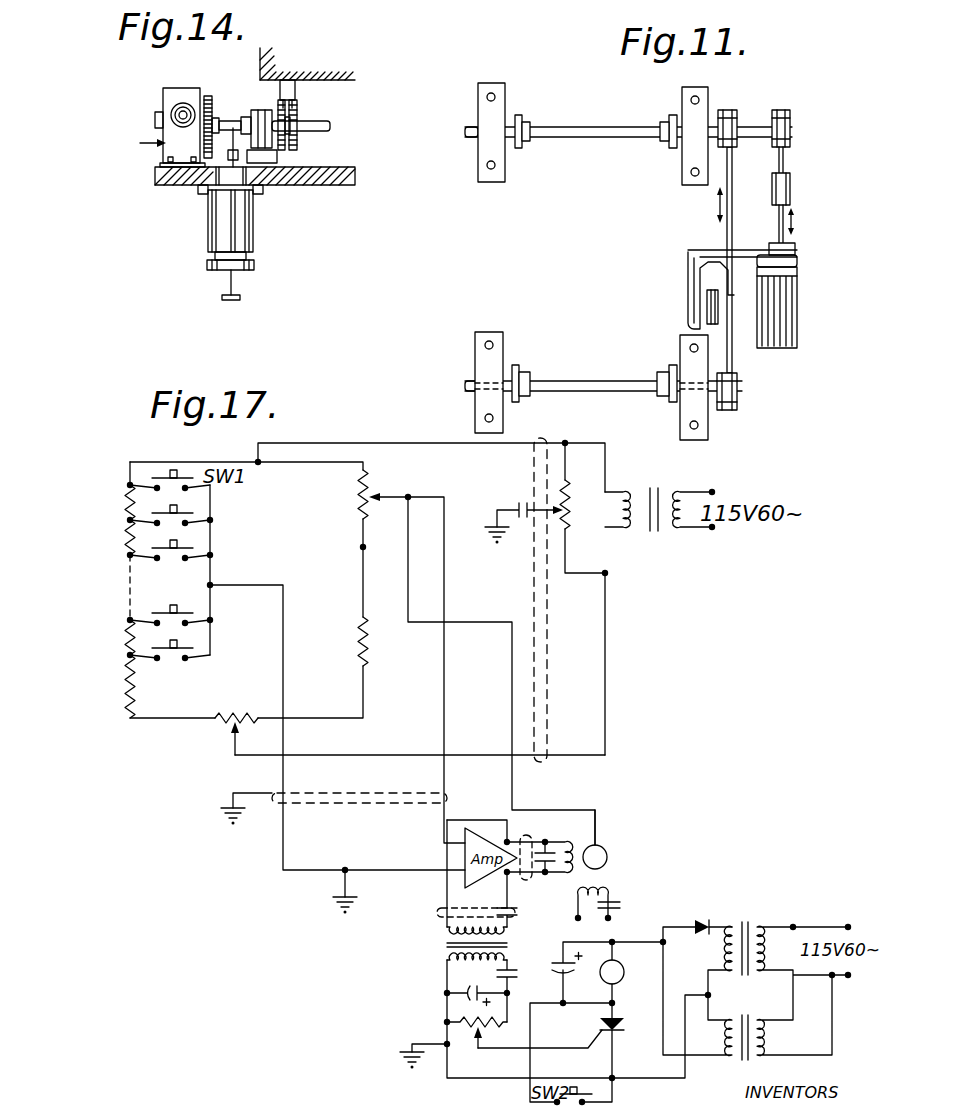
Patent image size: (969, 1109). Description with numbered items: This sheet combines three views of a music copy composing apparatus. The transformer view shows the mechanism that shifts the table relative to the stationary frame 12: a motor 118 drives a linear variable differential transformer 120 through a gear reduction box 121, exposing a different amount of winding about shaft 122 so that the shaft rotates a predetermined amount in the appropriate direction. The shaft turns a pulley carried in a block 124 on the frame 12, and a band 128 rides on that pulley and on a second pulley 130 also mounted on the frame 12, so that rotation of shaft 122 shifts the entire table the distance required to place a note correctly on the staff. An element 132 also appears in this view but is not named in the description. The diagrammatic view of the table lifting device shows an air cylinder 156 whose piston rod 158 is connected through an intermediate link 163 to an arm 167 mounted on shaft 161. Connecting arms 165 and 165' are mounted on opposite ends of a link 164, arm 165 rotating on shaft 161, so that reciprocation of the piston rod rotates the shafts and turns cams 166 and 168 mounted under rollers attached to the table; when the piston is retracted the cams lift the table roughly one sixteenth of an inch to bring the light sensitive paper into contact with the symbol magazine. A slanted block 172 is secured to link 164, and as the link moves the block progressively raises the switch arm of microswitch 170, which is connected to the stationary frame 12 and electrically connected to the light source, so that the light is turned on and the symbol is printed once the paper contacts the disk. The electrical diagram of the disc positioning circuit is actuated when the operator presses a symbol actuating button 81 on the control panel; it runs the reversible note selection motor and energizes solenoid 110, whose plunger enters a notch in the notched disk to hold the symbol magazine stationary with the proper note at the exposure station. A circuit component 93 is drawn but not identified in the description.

In FIG. 14, the motor 118 is at (163, 103).
In FIG. 14, the gear reduction box 121 is at (131, 145).
In FIG. 14, the block 124 is at (263, 110).
In FIG. 14, the bracket 132 is at (297, 90).
In FIG. 14, the band 128 is at (292, 121).
In FIG. 14, the shaft 122 is at (330, 131).
In FIG. 14, the second pulley 130 is at (294, 148).
In FIG. 14, the stationary frame 12 is at (320, 188).
In FIG. 14, the linear variable differential transformer 120 is at (238, 230).
In FIG. 11, the shaft 161 is at (598, 138).
In FIG. 11, the cam 168 is at (523, 117).
In FIG. 11, the cam 166 is at (518, 367).
In FIG. 11, the link 164 is at (727, 232).
In FIG. 11, the connecting arm 165 is at (753, 115).
In FIG. 11, the connecting arm 165' is at (761, 403).
In FIG. 11, the arm 167 is at (795, 125).
In FIG. 11, the intermediate link 163 is at (786, 157).
In FIG. 11, the piston rod 158 is at (796, 247).
In FIG. 11, the air cylinder 156 is at (798, 330).
In FIG. 11, the microswitch 170 is at (700, 278).
In FIG. 11, the slanted block 172 is at (720, 298).
In FIG. 17, the symbol actuating button 81 is at (77, 531).
In FIG. 17, the meter 93 is at (607, 857).
In FIG. 17, the solenoid 110 is at (618, 962).